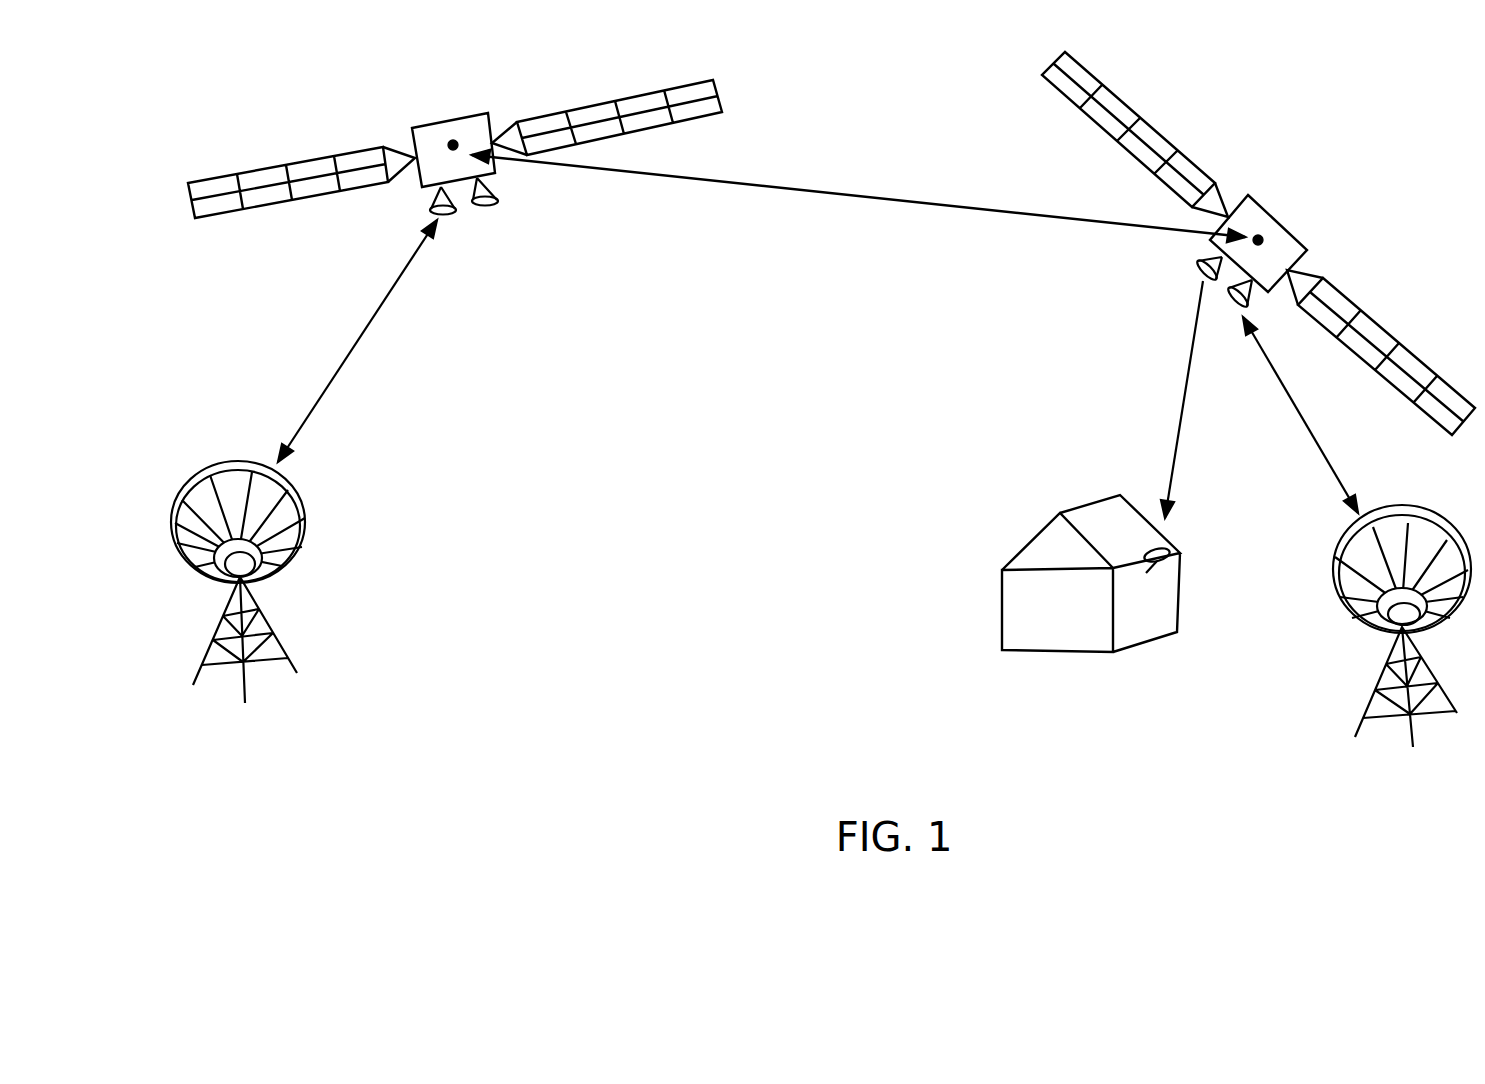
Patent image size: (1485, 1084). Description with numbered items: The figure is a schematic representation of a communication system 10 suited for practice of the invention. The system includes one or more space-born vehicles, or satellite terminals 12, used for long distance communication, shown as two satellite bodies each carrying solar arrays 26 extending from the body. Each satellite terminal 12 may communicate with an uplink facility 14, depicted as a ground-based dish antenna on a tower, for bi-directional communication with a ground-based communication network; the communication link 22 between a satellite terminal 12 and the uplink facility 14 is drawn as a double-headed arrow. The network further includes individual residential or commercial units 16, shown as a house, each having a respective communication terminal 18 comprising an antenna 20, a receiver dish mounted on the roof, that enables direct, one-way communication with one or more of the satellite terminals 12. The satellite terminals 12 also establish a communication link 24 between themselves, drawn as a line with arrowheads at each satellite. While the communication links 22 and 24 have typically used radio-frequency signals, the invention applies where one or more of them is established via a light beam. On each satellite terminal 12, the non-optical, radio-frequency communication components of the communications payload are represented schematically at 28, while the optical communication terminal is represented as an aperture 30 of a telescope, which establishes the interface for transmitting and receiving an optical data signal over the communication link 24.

The communication system 10 is at (692, 618).
The satellite terminal 12 is at (443, 118).
The uplink facility 14 is at (305, 518).
The residential or commercial unit 16 is at (1002, 585).
The communication terminal 18 is at (1182, 548).
The antenna 20 is at (1153, 565).
The communication link 22 is at (337, 373).
The communication link 24 is at (897, 203).
The solar arrays 26 is at (258, 170).
The non-optical communication components 28 is at (487, 208).
The aperture 30 is at (456, 140).